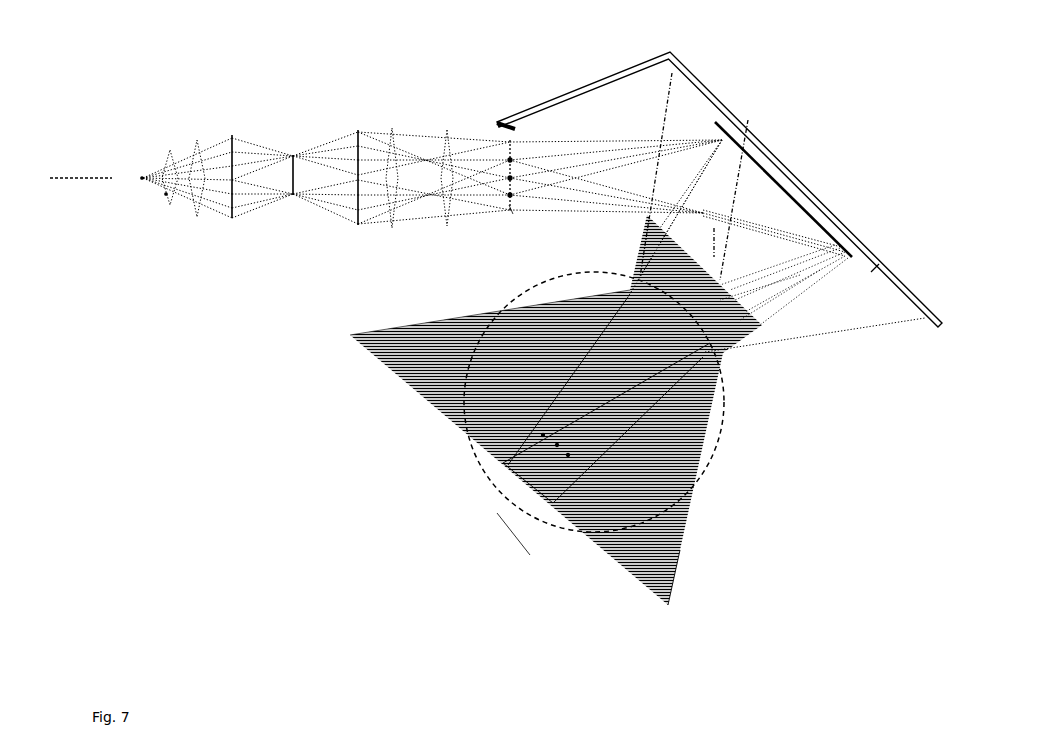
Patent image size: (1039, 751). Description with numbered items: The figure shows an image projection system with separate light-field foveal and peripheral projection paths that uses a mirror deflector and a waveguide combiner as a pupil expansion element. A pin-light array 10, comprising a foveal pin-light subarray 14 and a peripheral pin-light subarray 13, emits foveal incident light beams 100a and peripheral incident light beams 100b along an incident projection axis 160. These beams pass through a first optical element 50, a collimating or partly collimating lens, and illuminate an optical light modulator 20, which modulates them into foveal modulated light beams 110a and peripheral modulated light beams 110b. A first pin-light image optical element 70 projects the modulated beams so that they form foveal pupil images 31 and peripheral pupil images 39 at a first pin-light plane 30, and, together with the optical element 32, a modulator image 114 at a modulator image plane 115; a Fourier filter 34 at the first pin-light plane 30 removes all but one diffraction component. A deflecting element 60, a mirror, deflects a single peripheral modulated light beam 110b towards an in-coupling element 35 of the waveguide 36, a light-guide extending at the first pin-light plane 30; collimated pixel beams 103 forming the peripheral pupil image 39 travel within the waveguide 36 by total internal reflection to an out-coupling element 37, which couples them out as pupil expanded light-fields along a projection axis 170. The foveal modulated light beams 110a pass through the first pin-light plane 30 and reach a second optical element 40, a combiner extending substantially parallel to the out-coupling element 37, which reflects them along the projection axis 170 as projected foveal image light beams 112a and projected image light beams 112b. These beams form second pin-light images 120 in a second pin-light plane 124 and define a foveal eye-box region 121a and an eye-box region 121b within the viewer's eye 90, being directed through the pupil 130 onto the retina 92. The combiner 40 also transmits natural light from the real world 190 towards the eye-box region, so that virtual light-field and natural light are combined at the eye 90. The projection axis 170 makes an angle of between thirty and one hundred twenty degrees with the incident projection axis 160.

The pin-light array 10 is at (169, 148).
The peripheral pin-light subarray 13 is at (163, 196).
The foveal pin-light subarray 14 is at (161, 186).
The incident projection axis 160 is at (87, 184).
The foveal incident light beams 100a is at (227, 148).
The peripheral incident light beams 100b is at (197, 137).
The first optical element 50 is at (234, 132).
The optical light modulator 20 is at (293, 152).
The first pin-light image optical element 70 is at (359, 128).
The foveal modulated light beams 110a is at (362, 144).
The peripheral modulated light beams 110b is at (391, 126).
The collimated pixel beams 103 is at (446, 128).
The peripheral pupil images 39 is at (505, 146).
The in-coupling element 35 is at (506, 118).
The deflecting element 60 is at (520, 130).
The first pin-light plane 30 is at (505, 222).
The foveal pupil images 31 is at (505, 194).
The optical element 32 is at (512, 214).
The Fourier filter 34 is at (503, 212).
The waveguide 36 is at (612, 73).
The out-coupling element 37 is at (878, 268).
The real world 190 is at (898, 66).
The second optical element 40 is at (785, 186).
The projected image light beams 112b is at (670, 118).
The modulator image 114 is at (716, 214).
The modulator image plane 115 is at (717, 246).
The pupil 130 is at (556, 410).
The foveal eye-box region 121a is at (541, 434).
The eye-box region 121b is at (490, 327).
The projected foveal image light beams 112a is at (659, 417).
The second pin-light images 120 is at (586, 479).
The second pin-light plane 124 is at (675, 547).
The retina 92 is at (490, 484).
The viewer's eye 90 is at (556, 337).
The projection axis 170 is at (499, 516).